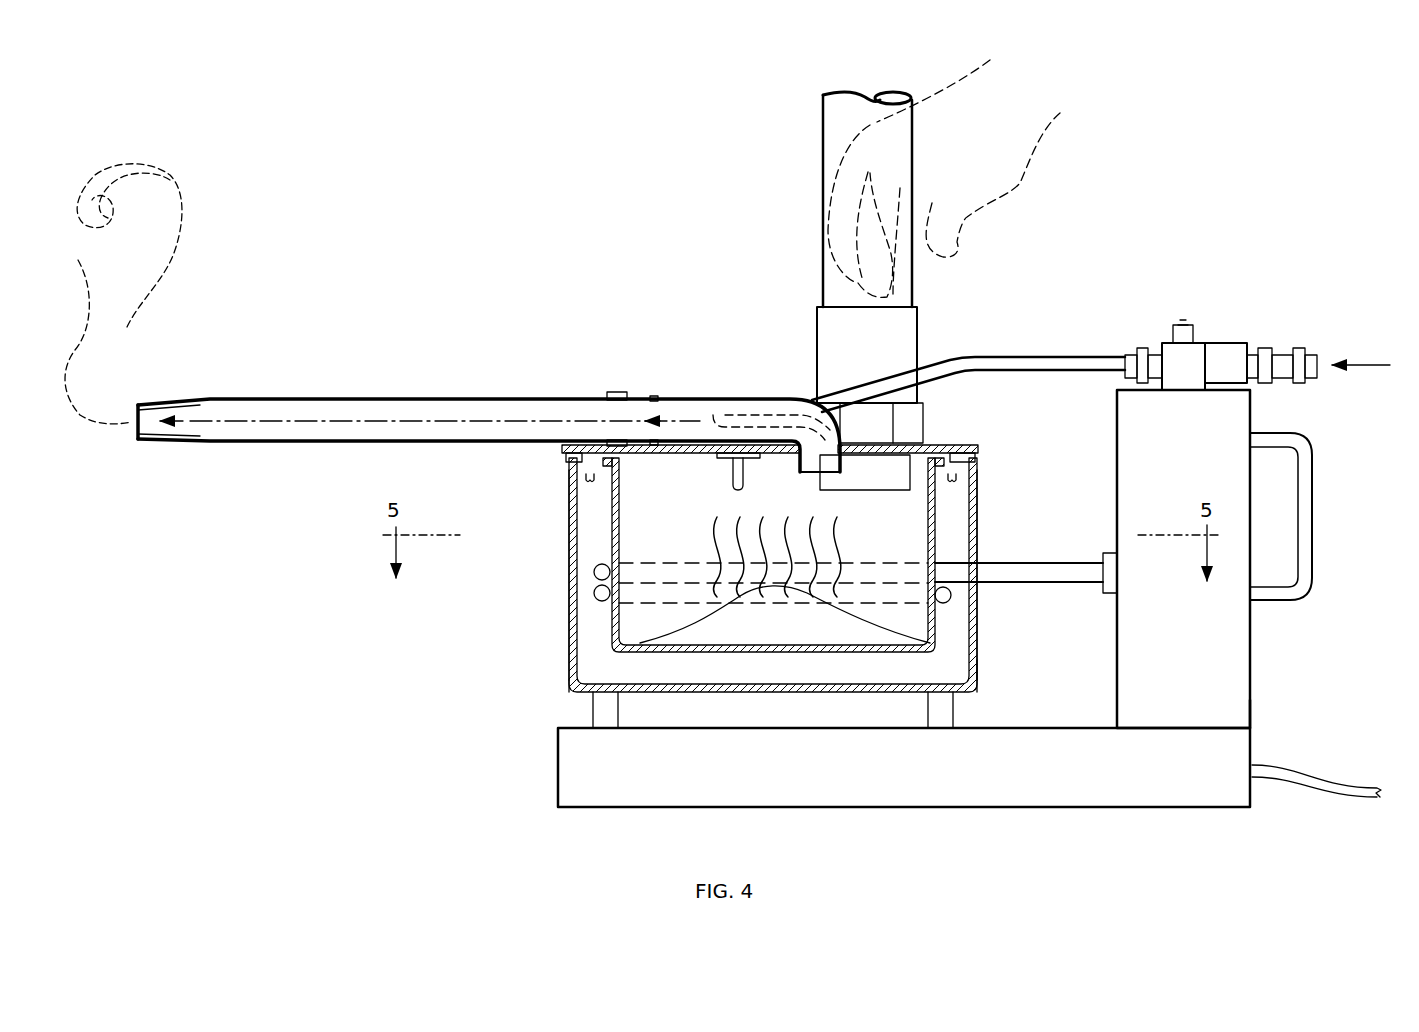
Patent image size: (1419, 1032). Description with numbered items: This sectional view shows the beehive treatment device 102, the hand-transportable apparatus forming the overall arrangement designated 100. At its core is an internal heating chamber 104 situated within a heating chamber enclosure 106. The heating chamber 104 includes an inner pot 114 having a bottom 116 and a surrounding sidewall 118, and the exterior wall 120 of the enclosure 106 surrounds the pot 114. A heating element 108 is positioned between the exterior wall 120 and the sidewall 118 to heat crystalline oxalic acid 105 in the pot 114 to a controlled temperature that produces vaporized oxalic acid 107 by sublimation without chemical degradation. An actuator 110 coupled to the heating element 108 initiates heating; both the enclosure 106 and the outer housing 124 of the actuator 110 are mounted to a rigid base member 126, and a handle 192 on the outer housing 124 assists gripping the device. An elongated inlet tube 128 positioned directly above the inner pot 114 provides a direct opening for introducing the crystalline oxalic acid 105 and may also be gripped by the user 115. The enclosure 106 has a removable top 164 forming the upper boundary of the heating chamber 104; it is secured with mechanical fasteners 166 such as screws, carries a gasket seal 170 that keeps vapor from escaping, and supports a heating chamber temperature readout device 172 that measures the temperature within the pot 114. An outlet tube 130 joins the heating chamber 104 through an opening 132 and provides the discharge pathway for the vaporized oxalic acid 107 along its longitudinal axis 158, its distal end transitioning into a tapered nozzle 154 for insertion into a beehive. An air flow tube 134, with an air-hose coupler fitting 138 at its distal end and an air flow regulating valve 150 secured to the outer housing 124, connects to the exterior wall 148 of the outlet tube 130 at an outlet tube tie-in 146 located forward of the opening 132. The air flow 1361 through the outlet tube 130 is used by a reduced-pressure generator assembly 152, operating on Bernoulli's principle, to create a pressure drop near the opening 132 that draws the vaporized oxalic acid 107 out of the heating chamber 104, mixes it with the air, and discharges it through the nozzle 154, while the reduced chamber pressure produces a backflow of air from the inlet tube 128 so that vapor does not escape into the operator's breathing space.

The vaporization system 100 is at (358, 146).
The beehive treatment device 102 is at (349, 236).
The internal heating chamber 104 is at (992, 668).
The crystalline oxalic acid 105 is at (800, 628).
The heating chamber enclosure 106 is at (548, 693).
The vaporized oxalic acid 107 is at (713, 525).
The heating element 108 is at (594, 575).
The actuator 110 is at (1262, 647).
The inner pot 114 is at (930, 515).
The user 115 is at (1020, 182).
The bottom 116 is at (657, 651).
The sidewall 118 is at (612, 522).
The exterior wall 120 is at (577, 622).
The outer housing 124 is at (1252, 683).
The rigid base member 126 is at (558, 772).
The inlet tube 128 is at (822, 115).
The outlet tube 130 is at (764, 418).
The opening 132 is at (920, 405).
The air flow tube 134 is at (1000, 358).
The air flow 1361 is at (687, 420).
The air-hose coupler fitting 138 is at (1305, 345).
The outlet tube tie-in 146 is at (717, 393).
The exterior wall 148 is at (695, 403).
The valve 150 is at (1245, 340).
The reduced-pressure generator assembly 152 is at (783, 383).
The nozzle 154 is at (162, 398).
The longitudinal axis 158 is at (337, 423).
The removable top 164 is at (978, 448).
The mechanical fasteners 166 is at (590, 482).
The gasket seal 170 is at (570, 456).
The heating chamber temperature readout device 172 is at (733, 472).
The handle 192 is at (1312, 482).